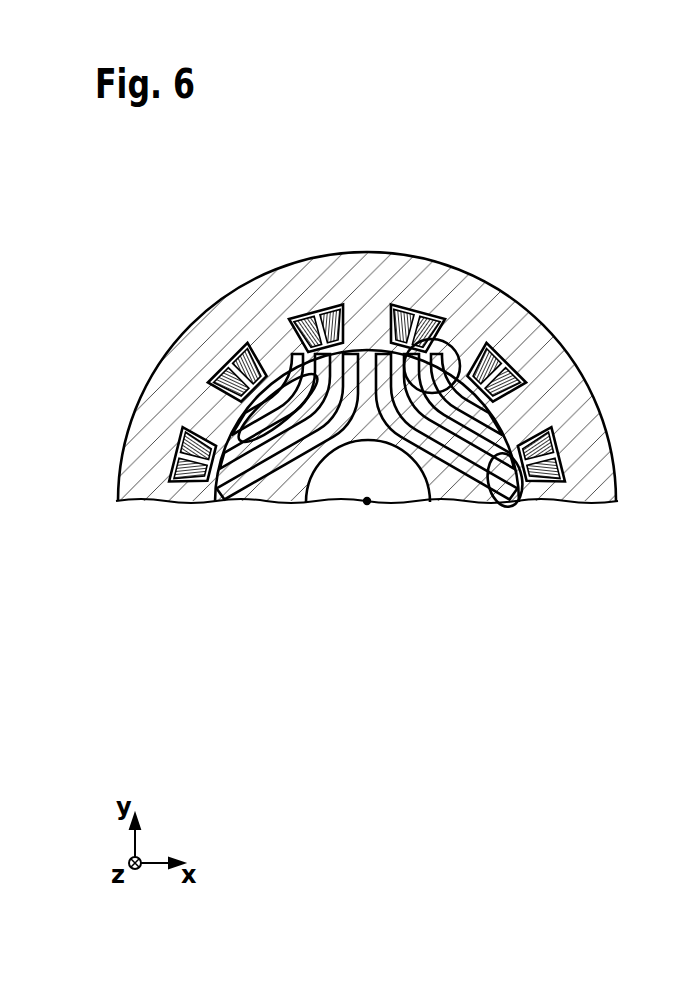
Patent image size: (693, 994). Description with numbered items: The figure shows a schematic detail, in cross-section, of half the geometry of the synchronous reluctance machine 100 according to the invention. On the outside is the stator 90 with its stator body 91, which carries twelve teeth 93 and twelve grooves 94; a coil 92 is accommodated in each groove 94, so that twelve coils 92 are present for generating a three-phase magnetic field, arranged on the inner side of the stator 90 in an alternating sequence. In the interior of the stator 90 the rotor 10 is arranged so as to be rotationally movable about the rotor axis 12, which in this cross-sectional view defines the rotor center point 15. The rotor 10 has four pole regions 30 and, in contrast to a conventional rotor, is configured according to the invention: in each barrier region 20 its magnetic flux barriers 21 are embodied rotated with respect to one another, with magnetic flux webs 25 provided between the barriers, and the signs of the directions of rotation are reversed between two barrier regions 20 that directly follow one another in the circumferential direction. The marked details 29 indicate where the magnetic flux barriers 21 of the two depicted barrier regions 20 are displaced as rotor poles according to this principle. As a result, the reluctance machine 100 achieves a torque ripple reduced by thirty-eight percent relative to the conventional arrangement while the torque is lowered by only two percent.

The reluctance machine 100 is at (171, 289).
The stator 90 is at (443, 253).
The stator body 91 is at (470, 298).
The stator coil 92 is at (522, 350).
The tooth 93 is at (520, 415).
The groove 94 is at (300, 322).
The pole region 30 is at (370, 333).
The rotor 10 is at (460, 508).
The rotor axis 12 is at (385, 542).
The rotor center point 15 is at (368, 506).
The barrier region 20 is at (271, 370).
The magnetic flux barrier 21 is at (250, 420).
The magnetic flux web 25 is at (317, 380).
The marked detail 29 is at (447, 340).